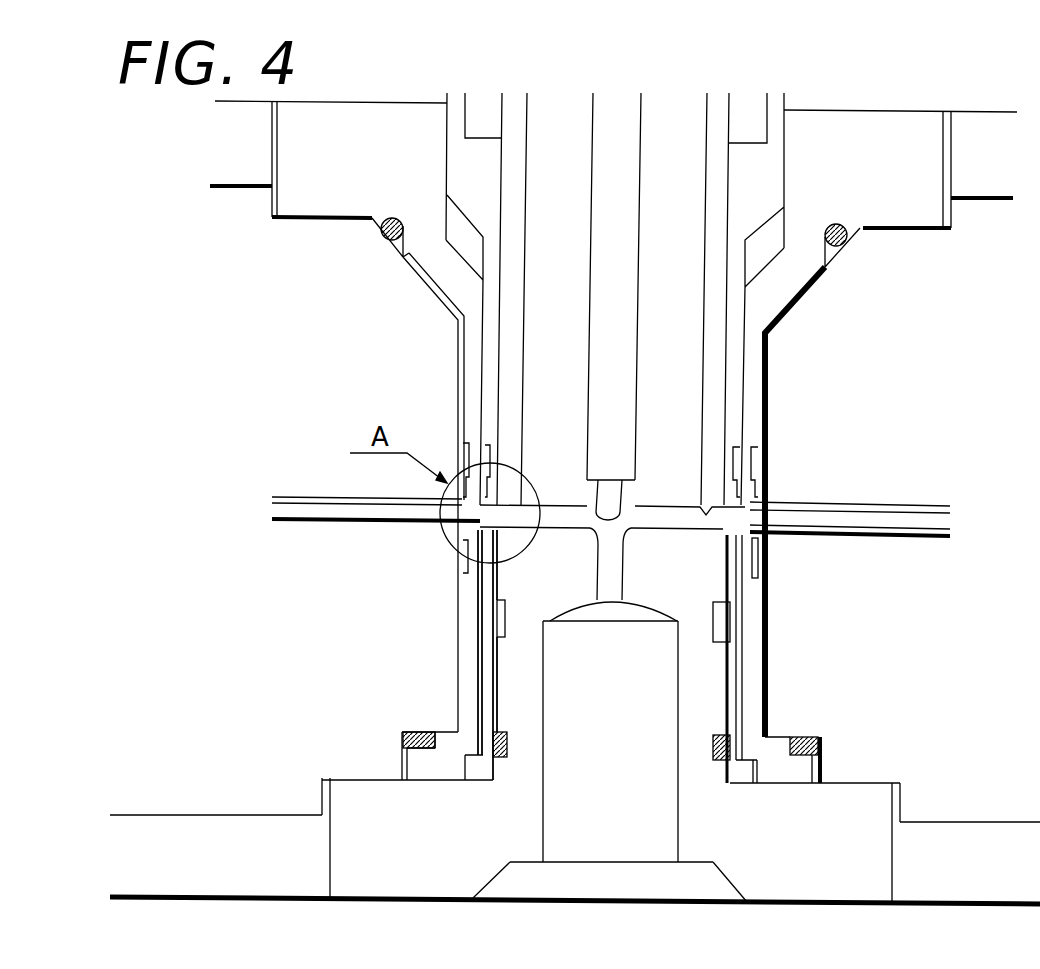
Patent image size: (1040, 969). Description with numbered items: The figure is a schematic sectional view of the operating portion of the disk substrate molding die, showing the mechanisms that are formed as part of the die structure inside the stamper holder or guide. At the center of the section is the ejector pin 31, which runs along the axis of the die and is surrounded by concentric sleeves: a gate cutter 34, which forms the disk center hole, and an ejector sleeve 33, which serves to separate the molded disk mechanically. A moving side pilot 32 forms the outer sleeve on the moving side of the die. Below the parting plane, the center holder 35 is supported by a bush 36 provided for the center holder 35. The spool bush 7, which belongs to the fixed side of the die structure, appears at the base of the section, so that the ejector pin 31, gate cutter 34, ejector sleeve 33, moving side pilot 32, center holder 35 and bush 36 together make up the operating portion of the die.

The ejector pin 31 is at (595, 405).
The moving side pilot 32 is at (753, 368).
The ejector sleeve 33 is at (735, 397).
The gate cutter 34 is at (713, 442).
The center holder 35 is at (748, 599).
The bush 36 is at (733, 648).
The spool bush 7 is at (858, 805).